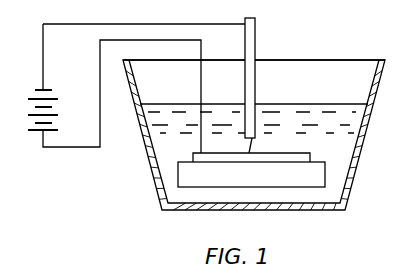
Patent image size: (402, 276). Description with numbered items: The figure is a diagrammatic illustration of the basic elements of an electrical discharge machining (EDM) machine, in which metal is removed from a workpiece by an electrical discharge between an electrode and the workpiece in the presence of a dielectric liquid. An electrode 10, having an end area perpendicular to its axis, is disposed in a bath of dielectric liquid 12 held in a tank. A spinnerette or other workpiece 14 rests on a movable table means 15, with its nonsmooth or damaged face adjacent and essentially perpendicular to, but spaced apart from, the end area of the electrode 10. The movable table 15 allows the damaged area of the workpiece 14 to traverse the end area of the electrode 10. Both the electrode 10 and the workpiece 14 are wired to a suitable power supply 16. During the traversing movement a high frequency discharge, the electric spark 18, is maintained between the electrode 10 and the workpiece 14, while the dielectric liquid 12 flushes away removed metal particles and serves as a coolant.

The electrode 10 is at (256, 30).
The dielectric liquid 12 is at (305, 104).
The workpiece 14 is at (310, 156).
The movable table means 15 is at (325, 182).
The power supply 16 is at (52, 97).
The electric spark 18 is at (258, 144).